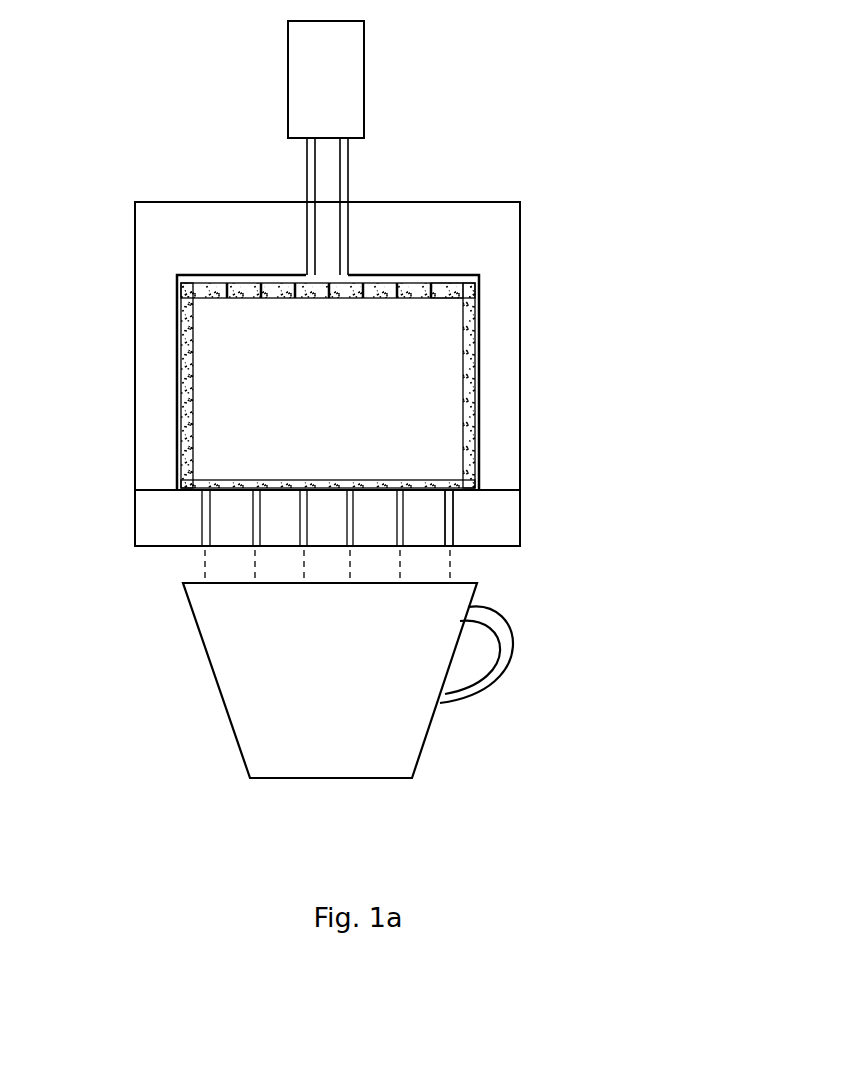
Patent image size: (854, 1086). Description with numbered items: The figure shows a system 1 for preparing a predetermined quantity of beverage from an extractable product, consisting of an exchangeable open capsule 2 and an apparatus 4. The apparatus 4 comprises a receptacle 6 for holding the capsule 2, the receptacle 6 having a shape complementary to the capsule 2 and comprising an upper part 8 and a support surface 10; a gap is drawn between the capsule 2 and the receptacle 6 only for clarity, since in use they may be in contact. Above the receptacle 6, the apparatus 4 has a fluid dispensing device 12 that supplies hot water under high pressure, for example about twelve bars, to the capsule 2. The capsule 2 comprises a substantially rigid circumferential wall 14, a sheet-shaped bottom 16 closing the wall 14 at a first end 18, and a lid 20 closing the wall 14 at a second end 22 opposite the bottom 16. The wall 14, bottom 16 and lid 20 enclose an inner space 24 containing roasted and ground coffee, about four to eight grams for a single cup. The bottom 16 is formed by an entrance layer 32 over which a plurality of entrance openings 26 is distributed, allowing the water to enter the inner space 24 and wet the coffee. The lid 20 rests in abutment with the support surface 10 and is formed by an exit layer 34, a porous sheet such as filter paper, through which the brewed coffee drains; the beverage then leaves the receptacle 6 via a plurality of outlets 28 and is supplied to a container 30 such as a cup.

The system 1 is at (580, 495).
The exchangeable open capsule 2 is at (480, 385).
The apparatus 4 is at (582, 232).
The receptacle 6 is at (522, 350).
The upper part 8 is at (522, 283).
The support surface 10 is at (472, 493).
The fluid dispensing device 12 is at (365, 62).
The circumferential wall 14 is at (480, 418).
The bottom 16 is at (447, 287).
The first end 18 is at (480, 315).
The lid 20 is at (442, 493).
The second end 22 is at (480, 470).
The inner space 24 is at (218, 413).
The entrance openings 26 is at (290, 304).
The outlets 28 is at (253, 538).
The container 30 is at (428, 738).
The entrance layer 32 is at (460, 285).
The exit layer 34 is at (455, 493).